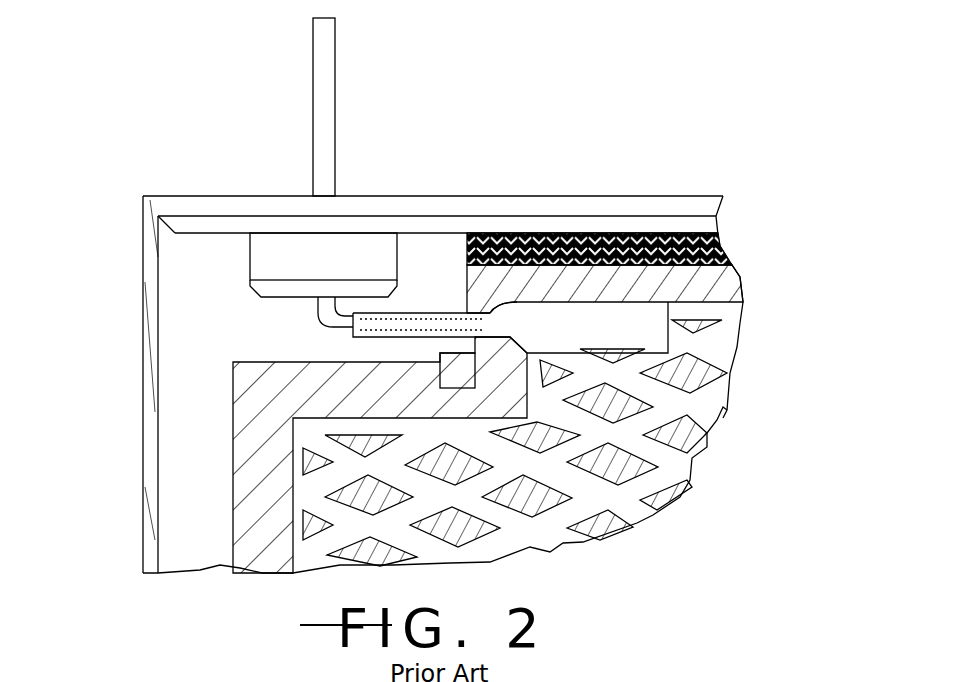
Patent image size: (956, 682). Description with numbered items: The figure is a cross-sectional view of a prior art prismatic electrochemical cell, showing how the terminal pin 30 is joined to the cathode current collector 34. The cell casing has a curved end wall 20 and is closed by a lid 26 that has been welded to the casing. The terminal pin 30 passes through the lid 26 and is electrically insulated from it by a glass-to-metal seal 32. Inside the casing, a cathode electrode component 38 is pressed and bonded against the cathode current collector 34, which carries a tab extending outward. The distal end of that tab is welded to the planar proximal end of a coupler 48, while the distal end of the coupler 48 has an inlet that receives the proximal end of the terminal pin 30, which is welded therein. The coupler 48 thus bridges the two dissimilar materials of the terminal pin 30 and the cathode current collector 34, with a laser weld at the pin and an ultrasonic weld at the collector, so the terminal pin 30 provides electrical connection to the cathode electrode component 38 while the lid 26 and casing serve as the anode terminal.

The curved end wall 20 is at (141, 350).
The lid 26 is at (545, 208).
The terminal pin 30 is at (336, 88).
The glass-to-metal seal 32 is at (280, 248).
The cathode current collector 34 is at (710, 403).
The cathode electrode component 38 is at (730, 283).
The coupler 48 is at (433, 310).